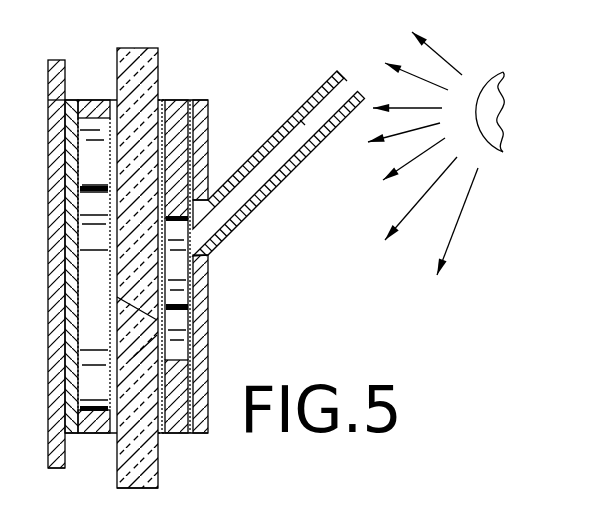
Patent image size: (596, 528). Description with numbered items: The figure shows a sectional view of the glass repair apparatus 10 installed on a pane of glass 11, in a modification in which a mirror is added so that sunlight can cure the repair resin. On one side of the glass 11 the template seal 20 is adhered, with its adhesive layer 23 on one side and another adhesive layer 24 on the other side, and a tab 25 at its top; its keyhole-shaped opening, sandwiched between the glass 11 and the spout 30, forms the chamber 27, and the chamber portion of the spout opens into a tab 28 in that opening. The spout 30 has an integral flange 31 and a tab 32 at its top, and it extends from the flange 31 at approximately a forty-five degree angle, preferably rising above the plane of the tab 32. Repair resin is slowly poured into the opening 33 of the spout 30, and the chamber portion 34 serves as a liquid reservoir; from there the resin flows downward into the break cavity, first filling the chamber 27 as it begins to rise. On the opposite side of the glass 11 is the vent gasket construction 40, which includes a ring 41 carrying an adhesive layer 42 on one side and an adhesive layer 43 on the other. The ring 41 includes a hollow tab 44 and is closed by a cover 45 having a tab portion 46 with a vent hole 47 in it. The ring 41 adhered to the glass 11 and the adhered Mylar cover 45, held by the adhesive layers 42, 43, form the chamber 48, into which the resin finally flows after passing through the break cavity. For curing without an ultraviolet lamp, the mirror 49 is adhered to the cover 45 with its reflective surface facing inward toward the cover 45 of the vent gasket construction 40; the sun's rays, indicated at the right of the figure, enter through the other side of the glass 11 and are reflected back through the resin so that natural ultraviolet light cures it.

The glass repair apparatus 10 is at (264, 62).
The glass 11 is at (138, 48).
The template seal 20 is at (178, 445).
The adhesive layer 23 is at (190, 100).
The adhesive layer 24 is at (173, 100).
The tab 25 is at (175, 115).
The chamber 27 is at (185, 315).
The tab 28 is at (205, 263).
The spout 30 is at (255, 220).
The flange 31 is at (207, 367).
The tab 32 is at (208, 113).
The opening 33 is at (355, 85).
The chamber portion 34 is at (290, 148).
The vent gasket construction 40 is at (90, 440).
The ring 41 is at (93, 100).
The adhesive layer 42 is at (110, 100).
The adhesive layer 43 is at (78, 100).
The hollow tab 44 is at (94, 154).
The cover 45 is at (72, 204).
The tab portion 46 is at (56, 112).
The vent hole 47 is at (66, 143).
The chamber 48 is at (95, 260).
The mirror 49 is at (58, 418).